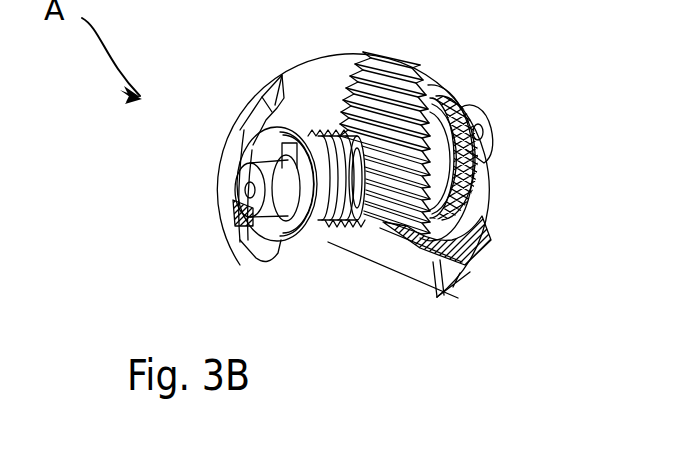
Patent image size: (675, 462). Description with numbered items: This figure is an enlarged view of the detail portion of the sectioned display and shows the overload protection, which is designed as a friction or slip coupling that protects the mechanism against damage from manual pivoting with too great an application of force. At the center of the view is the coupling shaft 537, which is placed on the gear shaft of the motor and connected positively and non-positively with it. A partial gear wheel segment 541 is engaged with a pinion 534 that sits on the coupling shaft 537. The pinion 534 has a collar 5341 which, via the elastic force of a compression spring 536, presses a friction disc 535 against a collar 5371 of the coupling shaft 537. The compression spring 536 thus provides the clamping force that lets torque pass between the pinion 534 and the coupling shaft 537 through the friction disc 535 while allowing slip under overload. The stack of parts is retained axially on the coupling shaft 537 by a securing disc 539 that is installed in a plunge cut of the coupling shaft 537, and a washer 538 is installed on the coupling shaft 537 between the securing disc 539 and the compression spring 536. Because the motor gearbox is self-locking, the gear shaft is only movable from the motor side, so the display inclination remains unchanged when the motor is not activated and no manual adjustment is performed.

The partial gear wheel segment 541 is at (317, 90).
The collar of the coupling shaft 5371 is at (557, 88).
The washer 538 is at (262, 152).
The coupling shaft 537 is at (248, 203).
The securing disc 539 is at (252, 258).
The compression spring 536 is at (330, 230).
The pinion 534 is at (380, 230).
The friction disc 535 is at (497, 208).
The collar of the pinion 5341 is at (567, 310).